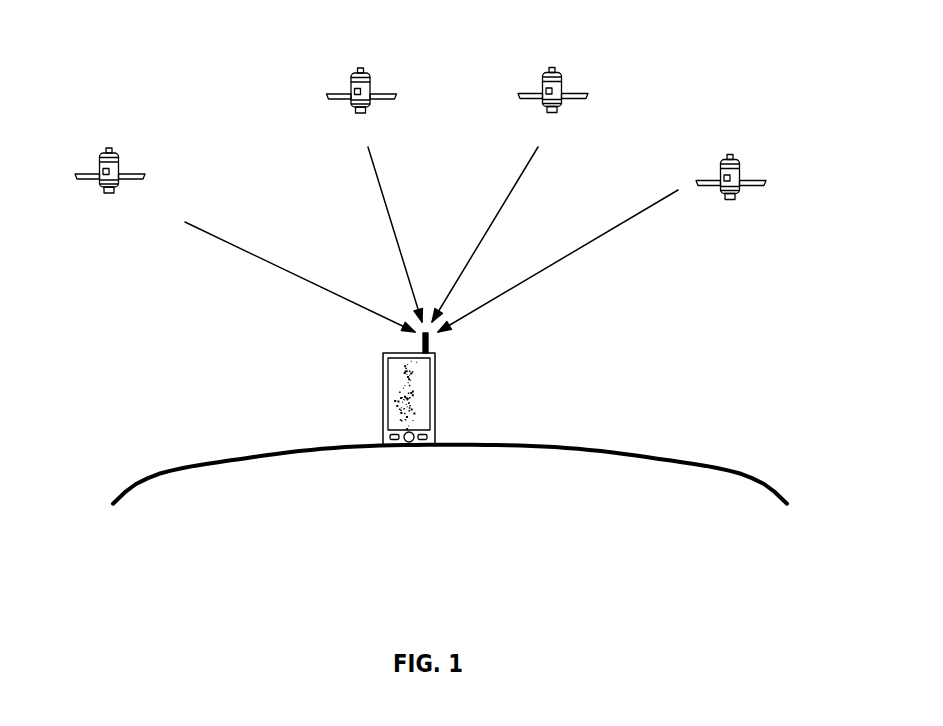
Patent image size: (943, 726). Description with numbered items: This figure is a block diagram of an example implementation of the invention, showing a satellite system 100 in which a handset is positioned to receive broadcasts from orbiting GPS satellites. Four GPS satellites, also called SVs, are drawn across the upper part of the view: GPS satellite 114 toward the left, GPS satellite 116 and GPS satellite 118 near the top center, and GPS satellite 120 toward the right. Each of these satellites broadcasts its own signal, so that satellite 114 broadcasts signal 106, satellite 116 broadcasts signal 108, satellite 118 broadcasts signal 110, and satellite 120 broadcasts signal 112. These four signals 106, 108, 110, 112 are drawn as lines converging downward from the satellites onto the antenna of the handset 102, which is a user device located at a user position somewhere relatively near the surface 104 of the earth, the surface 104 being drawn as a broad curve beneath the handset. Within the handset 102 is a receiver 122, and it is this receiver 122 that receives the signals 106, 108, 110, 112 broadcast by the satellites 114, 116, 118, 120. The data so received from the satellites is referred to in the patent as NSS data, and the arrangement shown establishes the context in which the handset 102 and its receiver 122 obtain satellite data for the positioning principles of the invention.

The satellite system 100 is at (663, 118).
The handset 102 is at (434, 415).
The surface of earth 104 is at (338, 452).
The signal 106 is at (283, 268).
The signal 108 is at (382, 203).
The signal 110 is at (499, 208).
The signal 112 is at (540, 268).
The GPS satellite 114 is at (109, 183).
The GPS satellite 116 is at (362, 103).
The GPS satellite 118 is at (552, 104).
The GPS satellite 120 is at (732, 191).
The receiver 122 is at (404, 385).